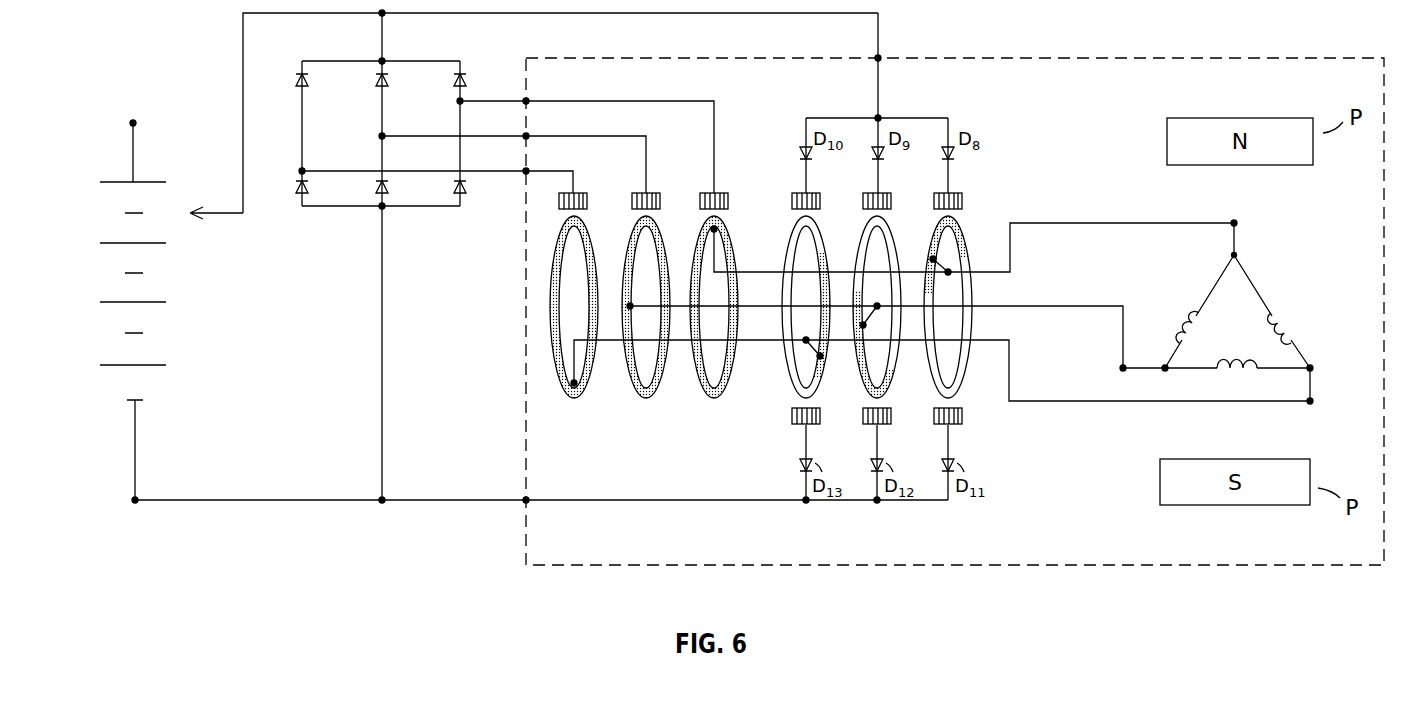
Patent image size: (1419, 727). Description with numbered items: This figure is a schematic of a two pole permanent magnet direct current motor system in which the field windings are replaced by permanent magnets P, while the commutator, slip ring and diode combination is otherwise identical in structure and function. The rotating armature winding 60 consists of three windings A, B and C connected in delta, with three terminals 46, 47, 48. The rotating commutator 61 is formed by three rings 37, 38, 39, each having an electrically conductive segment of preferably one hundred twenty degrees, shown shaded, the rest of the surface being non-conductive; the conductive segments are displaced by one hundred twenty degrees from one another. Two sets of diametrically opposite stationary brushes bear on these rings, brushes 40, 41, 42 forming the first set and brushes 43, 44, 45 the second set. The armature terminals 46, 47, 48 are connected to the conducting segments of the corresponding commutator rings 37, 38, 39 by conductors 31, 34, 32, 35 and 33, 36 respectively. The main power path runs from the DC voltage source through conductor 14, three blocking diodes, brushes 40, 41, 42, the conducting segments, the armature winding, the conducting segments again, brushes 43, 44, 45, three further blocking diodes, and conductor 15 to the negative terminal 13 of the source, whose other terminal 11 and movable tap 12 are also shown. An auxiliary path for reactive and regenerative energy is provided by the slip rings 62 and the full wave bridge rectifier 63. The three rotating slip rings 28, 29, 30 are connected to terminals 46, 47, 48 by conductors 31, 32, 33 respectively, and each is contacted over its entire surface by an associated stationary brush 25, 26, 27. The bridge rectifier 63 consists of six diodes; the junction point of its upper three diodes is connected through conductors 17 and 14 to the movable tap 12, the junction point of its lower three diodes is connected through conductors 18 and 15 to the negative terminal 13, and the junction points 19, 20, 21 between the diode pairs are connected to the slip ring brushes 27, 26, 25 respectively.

The positive battery terminal 11 is at (145, 119).
The movable tap 12 is at (200, 228).
The negative terminal 13 is at (147, 491).
The conductor 14 is at (326, 13).
The conductor 15 is at (267, 505).
The conductor 17 is at (389, 45).
The conductor 18 is at (391, 381).
The bridge junction 19 is at (305, 168).
The bridge junction 20 is at (378, 135).
The bridge junction 21 is at (457, 104).
The slip ring brush 25 is at (720, 190).
The slip ring brush 26 is at (652, 190).
The slip ring brush 27 is at (579, 190).
The slip ring 28 is at (736, 241).
The slip ring 29 is at (668, 241).
The slip ring 30 is at (596, 241).
The conductor 31 is at (983, 281).
The conductor 32 is at (981, 316).
The conductor 33 is at (979, 350).
The conductor 34 is at (938, 270).
The conductor 35 is at (866, 316).
The conductor 36 is at (817, 348).
The commutator ring 37 is at (971, 246).
The commutator ring 38 is at (899, 241).
The commutator ring 39 is at (828, 241).
The commutator brush 40 is at (956, 190).
The commutator brush 41 is at (885, 190).
The commutator brush 42 is at (814, 190).
The commutator brush 43 is at (957, 430).
The commutator brush 44 is at (886, 430).
The commutator brush 45 is at (816, 430).
The armature winding terminal 46 is at (1240, 218).
The armature winding terminal 47 is at (1126, 372).
The armature winding terminal 48 is at (1315, 406).
The rotating armature winding 60 is at (1231, 286).
The rotating commutator 61 is at (802, 271).
The rotating slip rings 62 is at (671, 151).
The full wave bridge rectifier 63 is at (409, 117).